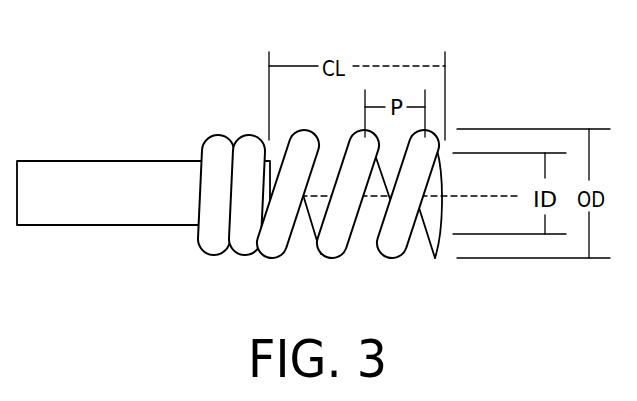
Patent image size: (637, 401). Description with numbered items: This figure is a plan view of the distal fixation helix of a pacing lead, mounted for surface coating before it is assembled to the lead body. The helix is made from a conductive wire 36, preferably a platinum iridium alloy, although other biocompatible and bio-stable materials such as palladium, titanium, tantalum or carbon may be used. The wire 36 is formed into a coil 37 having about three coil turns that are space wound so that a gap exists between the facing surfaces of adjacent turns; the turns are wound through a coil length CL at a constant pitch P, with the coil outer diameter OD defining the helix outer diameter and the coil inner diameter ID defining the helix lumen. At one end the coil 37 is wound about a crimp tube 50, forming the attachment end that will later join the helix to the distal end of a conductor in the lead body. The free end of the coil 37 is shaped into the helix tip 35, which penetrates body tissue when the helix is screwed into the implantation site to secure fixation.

The coil 37 is at (358, 154).
The wire 36 is at (328, 242).
The helix tip 35 is at (433, 257).
The crimp tube 50 is at (53, 177).